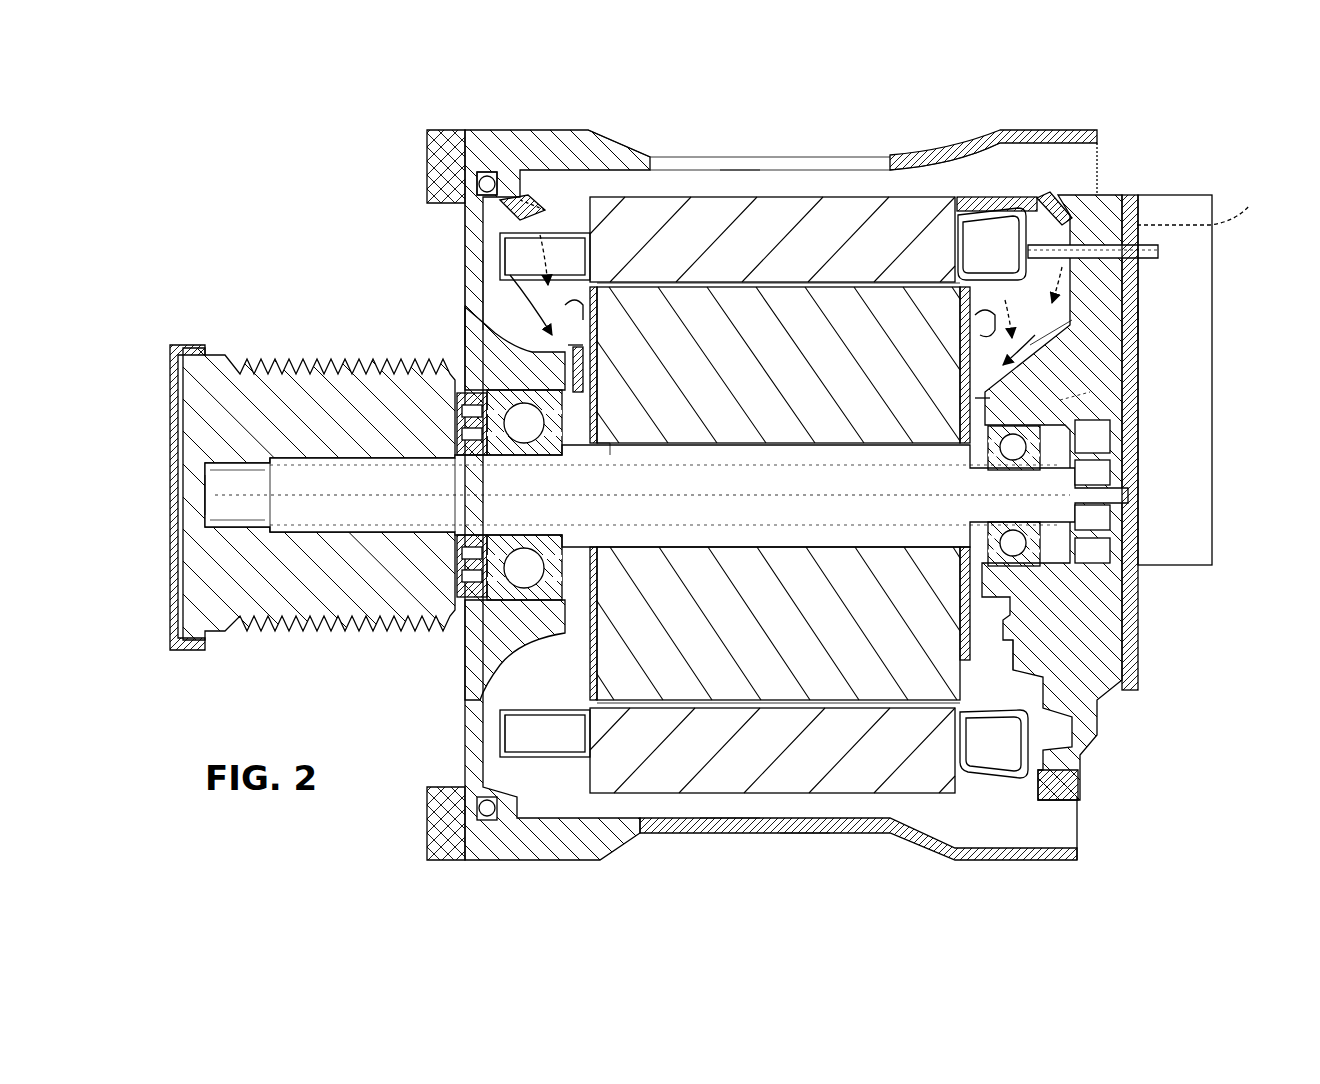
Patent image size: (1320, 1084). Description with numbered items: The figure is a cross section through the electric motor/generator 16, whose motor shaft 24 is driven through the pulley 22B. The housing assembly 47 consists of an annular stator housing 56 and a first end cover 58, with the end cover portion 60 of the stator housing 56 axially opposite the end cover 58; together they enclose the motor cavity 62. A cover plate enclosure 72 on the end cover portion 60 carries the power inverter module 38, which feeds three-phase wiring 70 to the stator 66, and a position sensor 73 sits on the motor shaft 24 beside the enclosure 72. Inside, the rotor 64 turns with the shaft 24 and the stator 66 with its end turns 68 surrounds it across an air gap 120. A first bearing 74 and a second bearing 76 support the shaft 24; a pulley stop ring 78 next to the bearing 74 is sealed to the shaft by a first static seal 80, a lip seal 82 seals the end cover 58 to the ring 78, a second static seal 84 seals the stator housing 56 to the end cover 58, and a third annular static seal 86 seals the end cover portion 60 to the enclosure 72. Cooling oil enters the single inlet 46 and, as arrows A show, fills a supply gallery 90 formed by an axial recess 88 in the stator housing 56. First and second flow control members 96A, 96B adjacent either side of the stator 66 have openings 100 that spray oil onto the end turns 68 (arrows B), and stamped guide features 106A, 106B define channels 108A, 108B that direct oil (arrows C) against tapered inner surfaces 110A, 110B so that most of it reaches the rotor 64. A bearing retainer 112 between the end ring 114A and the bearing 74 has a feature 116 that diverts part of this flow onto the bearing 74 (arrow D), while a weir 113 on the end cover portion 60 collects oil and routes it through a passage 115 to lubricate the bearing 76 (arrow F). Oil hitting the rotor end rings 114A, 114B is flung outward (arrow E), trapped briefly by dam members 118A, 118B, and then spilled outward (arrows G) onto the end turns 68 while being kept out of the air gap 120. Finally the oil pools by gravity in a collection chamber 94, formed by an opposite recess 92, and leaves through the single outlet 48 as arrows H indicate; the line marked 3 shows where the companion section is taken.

The motor/generator 16 is at (1252, 150).
The pulley 22B is at (265, 358).
The motor shaft 24 is at (222, 495).
The power inverter module 38 is at (1185, 490).
The inlet 46 is at (1062, 162).
The housing assembly 47 is at (682, 150).
The outlet 48 is at (1050, 840).
The stator housing 56 is at (783, 160).
The first end cover 58 is at (465, 302).
The end cover portion 60 is at (1122, 212).
The motor cavity 62 is at (482, 275).
The rotor 64 is at (782, 388).
The stator 66 is at (826, 257).
The end turns 68 is at (508, 250).
The three-phase wiring 70 is at (1208, 208).
The cover plate enclosure 72 is at (1137, 647).
The position sensor 73 is at (1102, 555).
The first bearing 74 is at (500, 390).
The second bearing 76 is at (962, 450).
The pulley stop ring 78 is at (452, 442).
The first static seal 80 is at (455, 540).
The lip seal 82 is at (455, 408).
The second static seal 84 is at (487, 183).
The third annular static seal 86 is at (1133, 288).
The axial extending recess 88 is at (790, 175).
The supply gallery 90 is at (740, 183).
The axial extending recess 92 is at (758, 815).
The collection chamber 94 is at (800, 815).
The first flow control member 96A is at (612, 175).
The second flow control member 96B is at (995, 215).
The openings 100 is at (543, 225).
The guide feature 106A is at (545, 495).
The guide feature 106B is at (975, 245).
The channel 108A is at (512, 205).
The channel 108B is at (1063, 213).
The inner surface 110A is at (465, 325).
The inner surface 110B is at (1128, 322).
The bearing retainer 112 is at (597, 445).
The weir 113 is at (1100, 395).
The end ring 114A is at (595, 413).
The end ring 114B is at (962, 397).
The passage 115 is at (1060, 400).
The feature 116 is at (583, 352).
The dam member 118A is at (568, 302).
The dam member 118B is at (962, 328).
The air gap 120 is at (663, 283).
The section line 3- 3 is at (543, 225).
The flow path arrows A is at (1123, 183).
The flow path arrows B is at (545, 205).
The flow arrows C is at (488, 223).
The flow arrow D is at (583, 365).
The flow arrow E is at (590, 335).
The flow arrow F is at (990, 418).
The flow arrows G is at (565, 320).
The flow arrows H is at (595, 818).